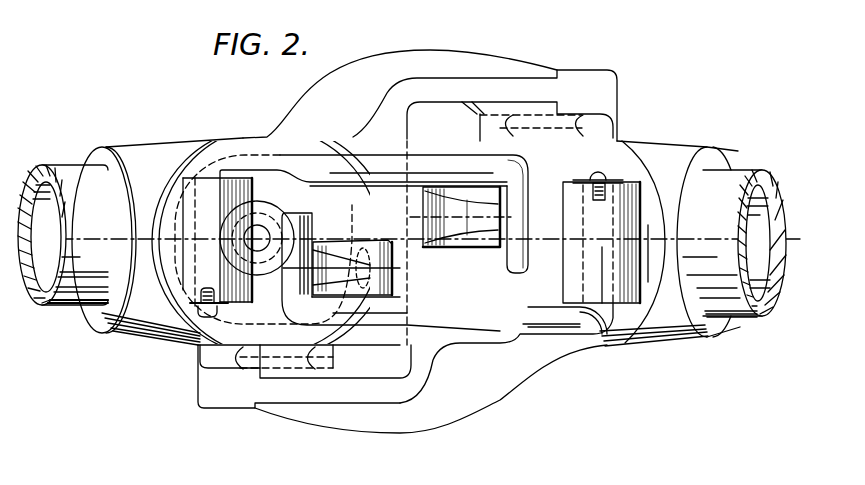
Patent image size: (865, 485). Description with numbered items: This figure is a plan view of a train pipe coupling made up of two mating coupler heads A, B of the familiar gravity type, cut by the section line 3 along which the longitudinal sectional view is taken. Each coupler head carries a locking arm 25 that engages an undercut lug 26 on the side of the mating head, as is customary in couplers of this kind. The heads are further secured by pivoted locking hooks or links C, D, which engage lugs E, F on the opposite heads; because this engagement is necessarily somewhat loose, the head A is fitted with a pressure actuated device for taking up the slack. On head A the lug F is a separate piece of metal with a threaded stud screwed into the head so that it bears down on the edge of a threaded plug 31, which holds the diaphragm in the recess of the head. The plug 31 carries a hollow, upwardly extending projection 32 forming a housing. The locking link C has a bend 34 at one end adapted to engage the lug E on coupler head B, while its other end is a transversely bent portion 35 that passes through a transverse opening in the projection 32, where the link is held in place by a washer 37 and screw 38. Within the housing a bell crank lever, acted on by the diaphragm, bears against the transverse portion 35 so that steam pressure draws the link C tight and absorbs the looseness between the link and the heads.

The section line 3— 3 is at (81, 233).
The locking arm 25 is at (478, 88).
The undercut lug 26 is at (488, 125).
The threaded plug 31 is at (172, 275).
The hollow upwardly extending projection 32 is at (190, 283).
The bend 34 is at (524, 216).
The transversely bent portion 35 is at (162, 188).
The washer 37 is at (210, 293).
The screw 38 is at (200, 310).
The coupler head A is at (141, 152).
The coupler head B is at (657, 150).
The locking link C is at (300, 136).
The locking link D is at (492, 320).
The lug E is at (465, 222).
The lug F is at (342, 267).